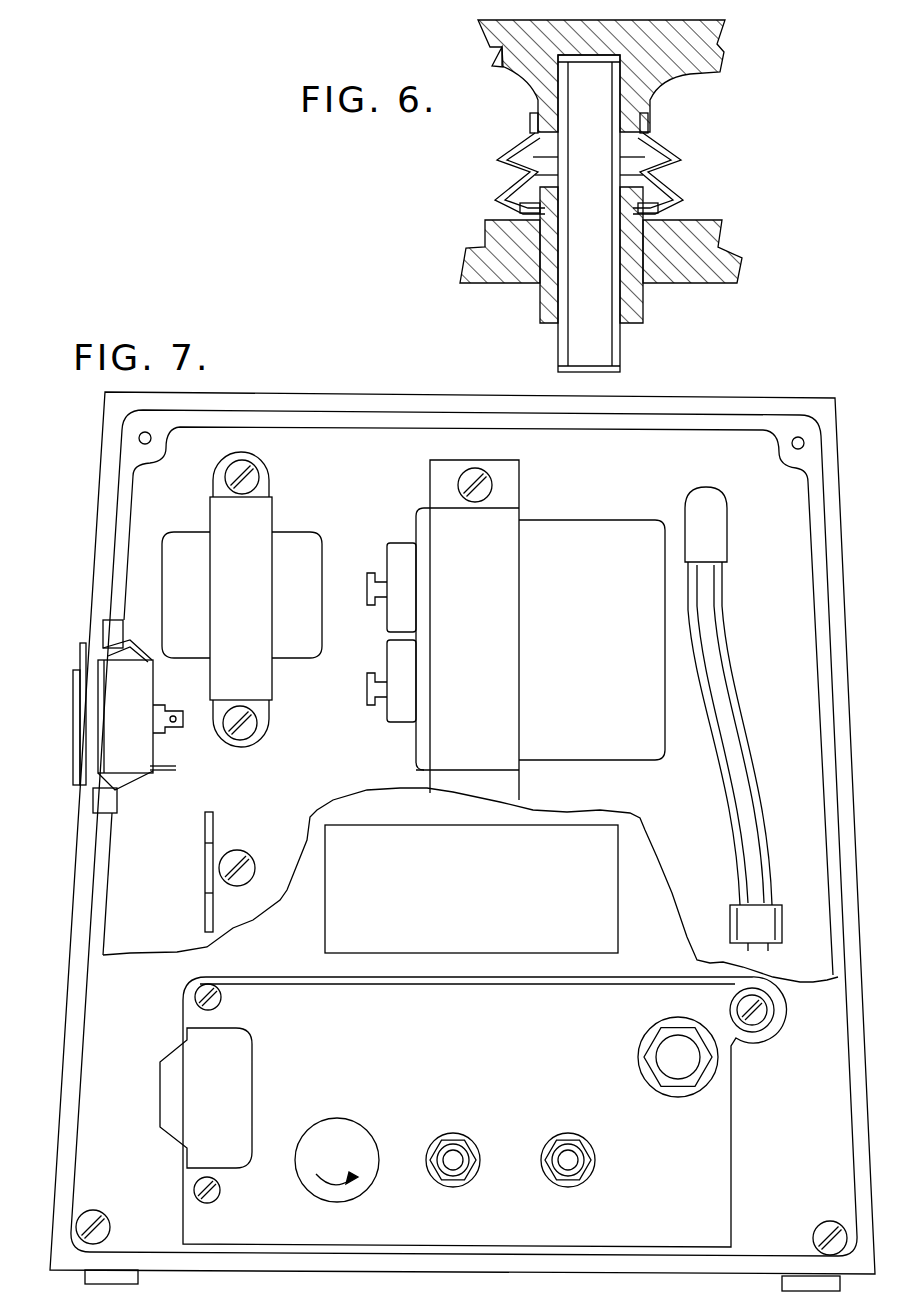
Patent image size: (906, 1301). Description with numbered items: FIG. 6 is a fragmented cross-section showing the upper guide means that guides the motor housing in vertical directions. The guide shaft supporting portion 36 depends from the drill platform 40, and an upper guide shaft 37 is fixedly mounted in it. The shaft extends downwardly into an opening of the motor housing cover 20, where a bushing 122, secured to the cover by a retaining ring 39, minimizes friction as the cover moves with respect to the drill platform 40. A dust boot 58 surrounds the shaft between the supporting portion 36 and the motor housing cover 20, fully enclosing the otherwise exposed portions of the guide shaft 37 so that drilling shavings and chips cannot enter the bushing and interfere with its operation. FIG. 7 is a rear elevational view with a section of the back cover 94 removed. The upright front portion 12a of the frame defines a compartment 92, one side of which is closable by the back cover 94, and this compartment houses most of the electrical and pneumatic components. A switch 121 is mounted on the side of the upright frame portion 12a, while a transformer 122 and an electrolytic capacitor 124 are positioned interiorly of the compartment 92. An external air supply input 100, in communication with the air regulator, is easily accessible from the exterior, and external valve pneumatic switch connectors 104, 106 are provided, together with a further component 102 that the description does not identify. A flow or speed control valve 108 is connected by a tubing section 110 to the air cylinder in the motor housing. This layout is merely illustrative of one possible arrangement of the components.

In FIG. 7, the upright front portion 12a is at (82, 916).
In FIG. 6, the motor housing cover 20 is at (498, 236).
In FIG. 6, the guide shaft supporting portion 36 is at (643, 77).
In FIG. 6, the upper guide shaft 37 is at (595, 353).
In FIG. 6, the retaining ring 39 is at (683, 192).
In FIG. 6, the drill platform 40 is at (513, 53).
In FIG. 6, the dust boot 58 is at (513, 143).
In FIG. 7, the compartment 92 is at (130, 848).
In FIG. 7, the back cover 94 is at (107, 1031).
In FIG. 7, the external air supply input 100 is at (643, 1073).
In FIG. 7, the fuse holder 102 is at (366, 1182).
In FIG. 7, the external valve pneumatic switch connector 104 is at (462, 1181).
In FIG. 7, the external valve pneumatic switch connector 106 is at (588, 1177).
In FIG. 7, the flow or speed control valve 108 is at (782, 968).
In FIG. 7, the tubing section 110 is at (722, 703).
In FIG. 7, the switch 121 is at (73, 750).
In FIG. 6, the bushing / transformer 122 is at (550, 308).
In FIG. 7, the bushing / transformer 122 is at (262, 627).
In FIG. 7, the electrolytic capacitor 124 is at (608, 604).